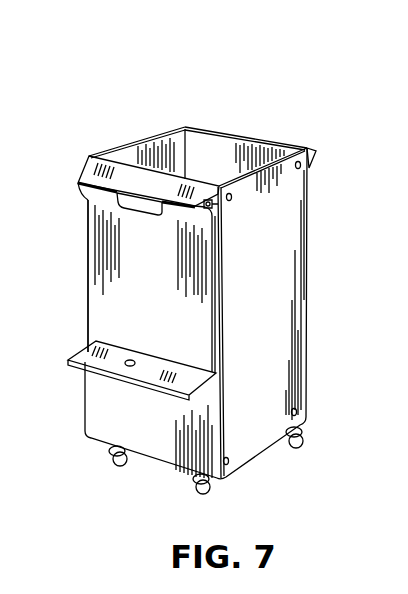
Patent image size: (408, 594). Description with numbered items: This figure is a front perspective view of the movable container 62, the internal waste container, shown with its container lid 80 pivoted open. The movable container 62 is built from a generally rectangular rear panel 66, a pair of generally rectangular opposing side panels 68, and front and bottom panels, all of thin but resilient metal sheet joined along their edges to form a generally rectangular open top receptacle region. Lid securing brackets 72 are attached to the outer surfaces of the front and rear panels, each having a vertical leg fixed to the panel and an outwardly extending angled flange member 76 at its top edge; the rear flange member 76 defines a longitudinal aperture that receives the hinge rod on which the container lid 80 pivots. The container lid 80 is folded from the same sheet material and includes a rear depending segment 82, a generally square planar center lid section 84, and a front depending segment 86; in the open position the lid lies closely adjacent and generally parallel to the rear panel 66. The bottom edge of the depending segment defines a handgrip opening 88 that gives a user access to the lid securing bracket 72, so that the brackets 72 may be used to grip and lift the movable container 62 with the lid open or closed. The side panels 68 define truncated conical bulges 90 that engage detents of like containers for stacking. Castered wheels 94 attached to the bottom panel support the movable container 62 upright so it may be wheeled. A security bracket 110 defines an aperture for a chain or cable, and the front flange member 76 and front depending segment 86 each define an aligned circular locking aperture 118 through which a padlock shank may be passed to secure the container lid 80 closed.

The movable container 62 is at (182, 84).
The rear panel 66 is at (215, 147).
The side panels 68 is at (173, 147).
The lid securing bracket 72 is at (264, 126).
The angled flange member 76 is at (153, 177).
The container lid 80 is at (95, 300).
The rear depending segment 82 is at (86, 202).
The center lid section 84 is at (95, 257).
The front depending segment 86 is at (83, 352).
The handgrip opening 88 is at (135, 200).
The bulges 90 is at (301, 164).
The castered wheels 94 is at (302, 447).
The security bracket 110 is at (213, 212).
The locking aperture 118 is at (130, 360).